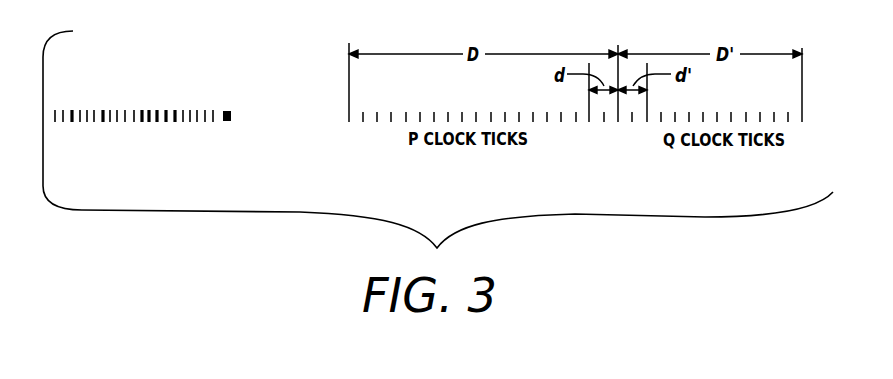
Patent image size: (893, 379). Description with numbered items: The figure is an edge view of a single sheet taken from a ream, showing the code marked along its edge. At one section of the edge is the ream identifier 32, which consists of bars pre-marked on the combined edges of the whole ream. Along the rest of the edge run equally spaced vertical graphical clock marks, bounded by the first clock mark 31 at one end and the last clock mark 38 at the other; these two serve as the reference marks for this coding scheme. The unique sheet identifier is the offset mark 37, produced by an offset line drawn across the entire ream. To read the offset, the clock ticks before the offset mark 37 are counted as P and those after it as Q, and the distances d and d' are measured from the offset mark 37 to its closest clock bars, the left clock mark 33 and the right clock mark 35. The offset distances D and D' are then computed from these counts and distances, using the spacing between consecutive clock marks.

The first clock mark 31 is at (347, 118).
The ream identifier 32 is at (235, 140).
The left clock mark 33 is at (589, 120).
The right clock mark 35 is at (647, 120).
The offset mark 37 is at (618, 120).
The last clock mark 38 is at (805, 118).